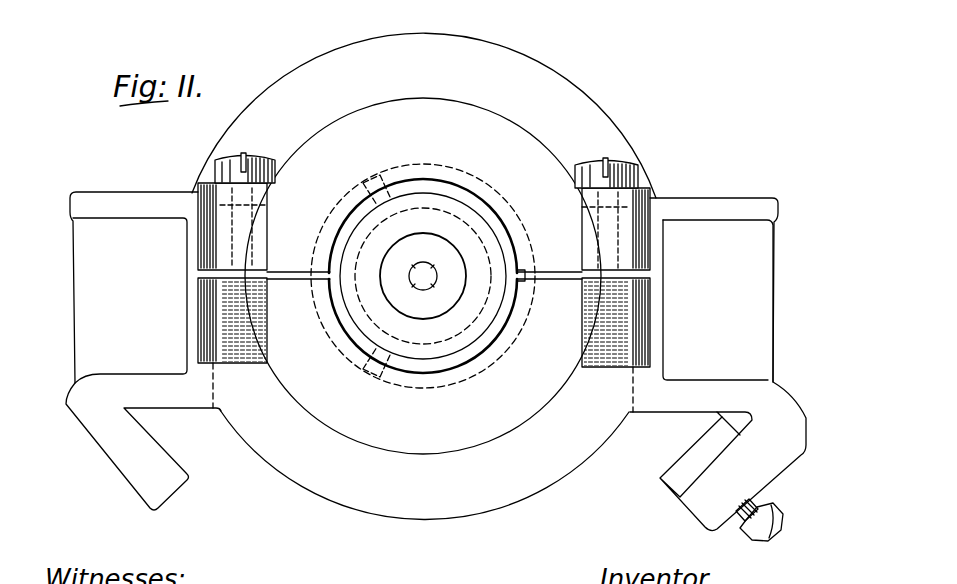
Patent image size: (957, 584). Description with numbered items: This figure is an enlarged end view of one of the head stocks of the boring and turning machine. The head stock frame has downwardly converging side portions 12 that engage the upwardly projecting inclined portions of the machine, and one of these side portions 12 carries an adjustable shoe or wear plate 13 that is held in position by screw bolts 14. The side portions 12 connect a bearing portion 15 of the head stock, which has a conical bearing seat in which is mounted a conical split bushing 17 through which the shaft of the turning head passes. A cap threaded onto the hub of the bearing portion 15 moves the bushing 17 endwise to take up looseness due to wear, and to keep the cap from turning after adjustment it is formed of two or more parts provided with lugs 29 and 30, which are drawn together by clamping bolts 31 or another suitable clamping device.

The side portions 12 is at (174, 465).
The adjustable shoe or wear plate 13 is at (675, 482).
The screw bolts 14 is at (760, 531).
The bearing portions 15 is at (535, 64).
The conical split bushing 17 is at (438, 365).
The lug 29 is at (204, 197).
The lug 30 is at (210, 340).
The clamping bolts 31 is at (235, 154).